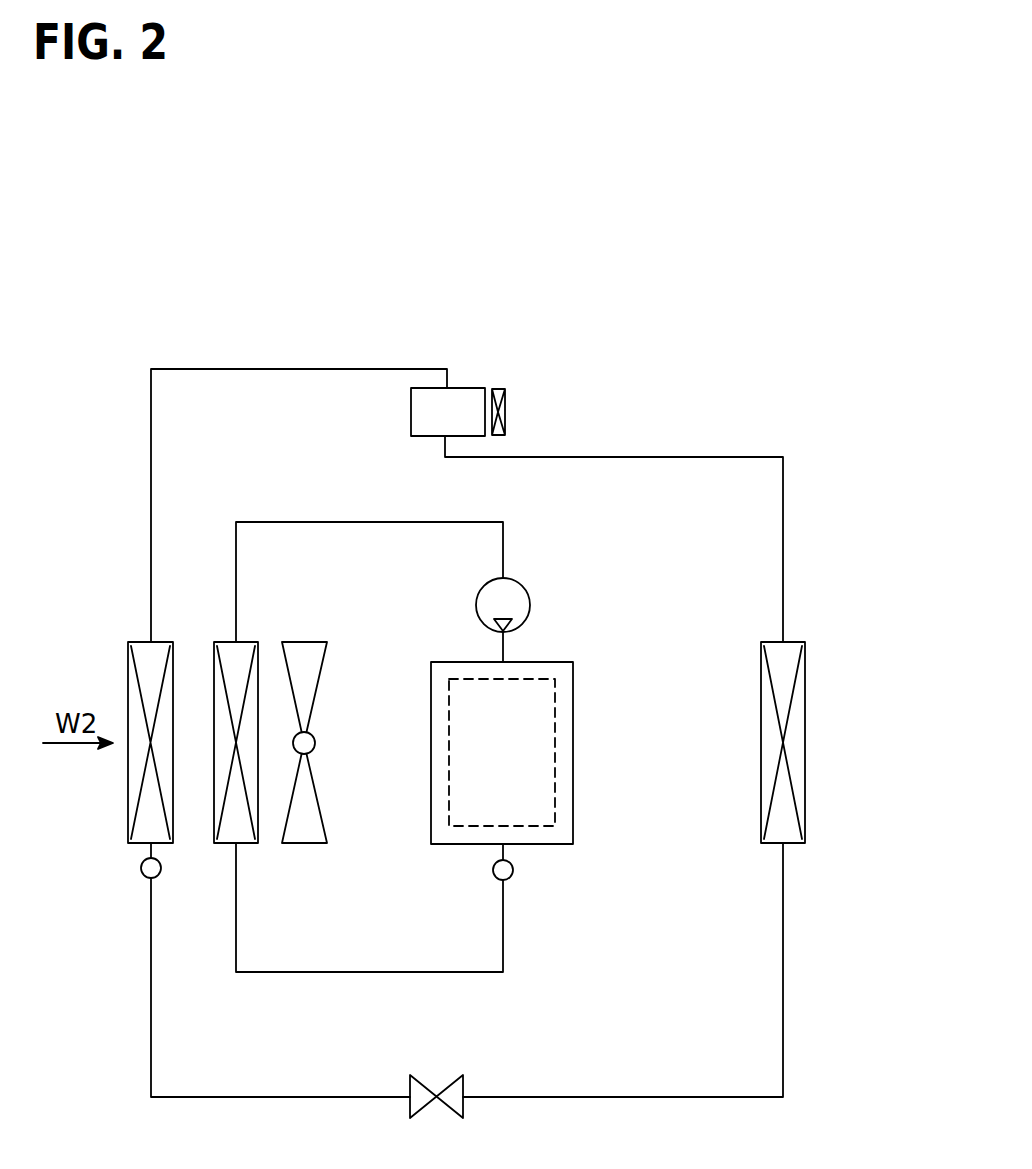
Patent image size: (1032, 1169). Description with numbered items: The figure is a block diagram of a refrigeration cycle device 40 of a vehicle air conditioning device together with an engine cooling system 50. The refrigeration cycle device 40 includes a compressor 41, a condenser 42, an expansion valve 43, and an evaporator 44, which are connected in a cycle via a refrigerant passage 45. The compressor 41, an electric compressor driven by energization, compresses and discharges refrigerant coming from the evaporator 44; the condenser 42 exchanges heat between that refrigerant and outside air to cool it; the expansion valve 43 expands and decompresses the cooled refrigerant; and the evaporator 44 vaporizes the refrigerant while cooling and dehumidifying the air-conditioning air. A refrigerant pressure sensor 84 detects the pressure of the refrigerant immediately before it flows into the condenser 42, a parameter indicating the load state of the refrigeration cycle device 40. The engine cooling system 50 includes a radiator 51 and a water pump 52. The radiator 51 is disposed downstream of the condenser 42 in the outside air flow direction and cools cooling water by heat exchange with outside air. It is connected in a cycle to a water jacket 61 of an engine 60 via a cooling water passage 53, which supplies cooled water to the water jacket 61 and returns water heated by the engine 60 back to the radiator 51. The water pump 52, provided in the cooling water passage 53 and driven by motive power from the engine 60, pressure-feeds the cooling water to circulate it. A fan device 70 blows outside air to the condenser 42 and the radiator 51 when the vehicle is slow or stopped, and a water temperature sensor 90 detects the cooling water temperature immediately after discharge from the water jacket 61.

The refrigeration cycle device 40 is at (492, 728).
The compressor 41 is at (468, 388).
The condenser 42 is at (143, 641).
The expansion valve 43 is at (463, 1100).
The evaporator 44 is at (806, 750).
The refrigerant passage 45 is at (328, 369).
The engine cooling system 50 is at (442, 719).
The radiator 51 is at (246, 641).
The water pump 52 is at (523, 583).
The cooling water passage 53 is at (380, 522).
The engine 60 is at (574, 667).
The water jacket 61 is at (555, 708).
The fan device 70 is at (314, 740).
The refrigerant pressure sensor 84 is at (142, 872).
The water temperature sensor 90 is at (493, 872).